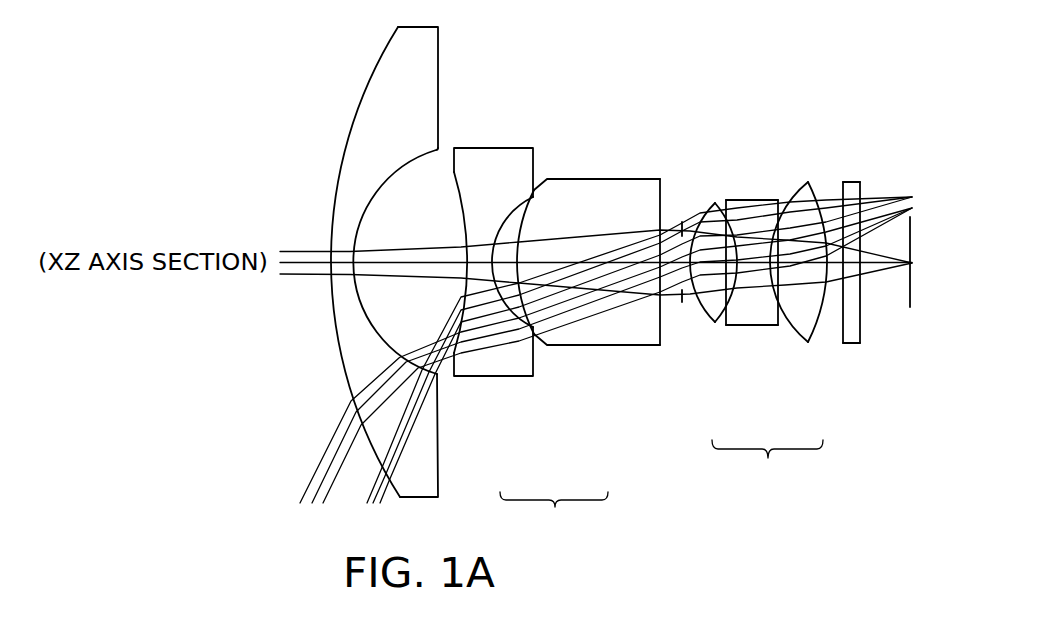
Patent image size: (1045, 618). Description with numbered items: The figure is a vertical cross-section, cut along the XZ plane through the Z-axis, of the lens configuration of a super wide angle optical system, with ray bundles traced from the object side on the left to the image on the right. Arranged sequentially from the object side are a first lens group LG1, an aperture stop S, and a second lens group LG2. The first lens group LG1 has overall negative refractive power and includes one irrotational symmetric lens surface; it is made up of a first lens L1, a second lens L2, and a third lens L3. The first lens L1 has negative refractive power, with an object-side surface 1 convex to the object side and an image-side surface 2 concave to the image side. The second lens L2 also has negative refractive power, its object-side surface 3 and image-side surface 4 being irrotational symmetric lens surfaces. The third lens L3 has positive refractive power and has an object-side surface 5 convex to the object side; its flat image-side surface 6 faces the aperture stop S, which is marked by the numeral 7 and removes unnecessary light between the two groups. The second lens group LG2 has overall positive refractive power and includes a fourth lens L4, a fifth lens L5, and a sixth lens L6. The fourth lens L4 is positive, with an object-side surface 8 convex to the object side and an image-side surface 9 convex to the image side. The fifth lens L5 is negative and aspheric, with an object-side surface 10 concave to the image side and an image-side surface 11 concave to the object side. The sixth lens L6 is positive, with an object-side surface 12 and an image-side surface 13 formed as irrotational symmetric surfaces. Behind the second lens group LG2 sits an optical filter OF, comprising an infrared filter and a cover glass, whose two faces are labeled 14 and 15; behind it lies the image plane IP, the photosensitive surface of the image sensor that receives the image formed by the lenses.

The object-side surface 1 is at (352, 107).
The image-side surface 2 is at (436, 151).
The object-side surface 3 is at (452, 162).
The image-side surface 4 is at (518, 192).
The object-side surface 5 is at (541, 186).
The image-side surface of third lens L3 6 is at (661, 181).
The aperture stop S 7 is at (682, 222).
The object-side surface 8 is at (715, 203).
The image-side surface 9 is at (730, 215).
The object-side surface 10 is at (750, 200).
The image-side surface 11 is at (794, 205).
The object-side surface 12 is at (808, 182).
The image-side surface 13 is at (822, 182).
The object-side surface of optical filter OF 14 is at (843, 182).
The image-side surface of optical filter OF 15 is at (861, 187).
The first lens L1 is at (430, 452).
The second lens L2 is at (510, 362).
The third lens L3 is at (587, 335).
The fourth lens L4 is at (714, 324).
The fifth lens L5 is at (752, 326).
The sixth lens L6 is at (826, 346).
The aperture stop S is at (682, 300).
The optical filter OF is at (850, 344).
The image plane IP is at (910, 308).
The first lens group LG1 is at (554, 516).
The second lens group LG2 is at (767, 465).